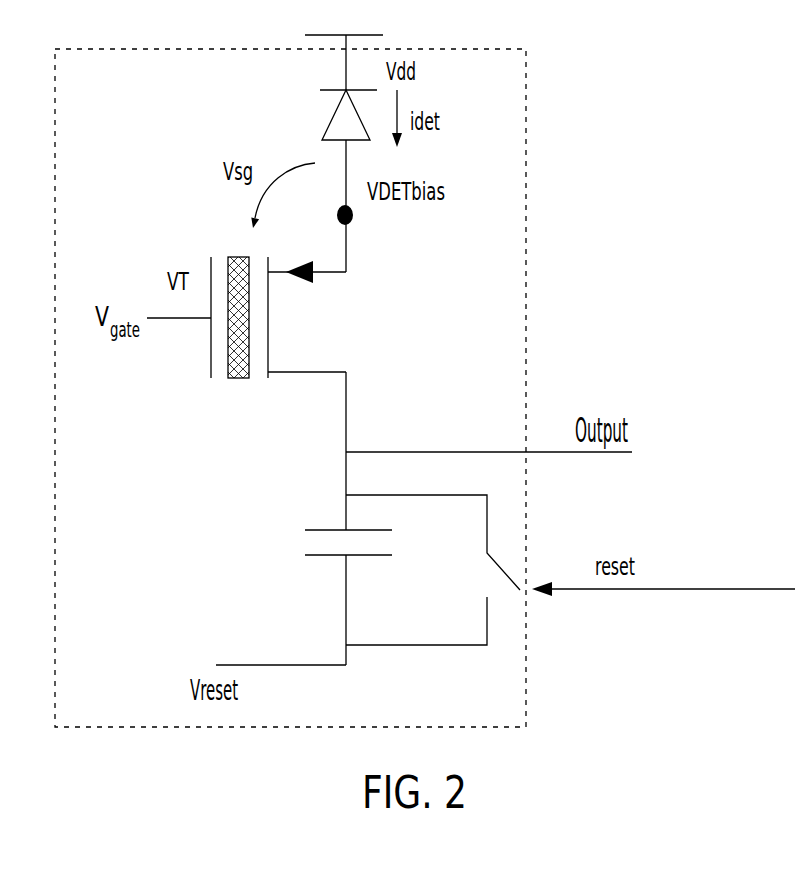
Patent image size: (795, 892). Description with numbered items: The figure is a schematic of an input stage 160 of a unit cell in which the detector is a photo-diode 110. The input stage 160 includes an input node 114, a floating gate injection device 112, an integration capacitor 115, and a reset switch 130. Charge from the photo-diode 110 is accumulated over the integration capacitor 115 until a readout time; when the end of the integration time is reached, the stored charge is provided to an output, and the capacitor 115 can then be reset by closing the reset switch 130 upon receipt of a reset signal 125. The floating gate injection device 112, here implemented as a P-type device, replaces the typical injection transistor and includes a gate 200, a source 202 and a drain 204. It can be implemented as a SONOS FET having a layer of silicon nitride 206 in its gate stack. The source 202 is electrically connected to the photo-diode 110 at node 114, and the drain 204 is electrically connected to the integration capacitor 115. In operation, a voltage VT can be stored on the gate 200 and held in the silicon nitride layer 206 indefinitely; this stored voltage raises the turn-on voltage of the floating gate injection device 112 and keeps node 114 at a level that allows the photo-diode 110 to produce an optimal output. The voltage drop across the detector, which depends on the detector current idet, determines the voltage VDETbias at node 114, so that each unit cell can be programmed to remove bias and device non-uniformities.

The photo-diode 110 is at (333, 118).
The floating gate injection device 112 is at (249, 306).
The input node 114 is at (355, 218).
The integration capacitor 115 is at (292, 538).
The reset signal 125 is at (703, 588).
The reset switch 130 is at (512, 604).
The input stage 160 is at (528, 237).
The gate 200 is at (168, 321).
The source 202 is at (328, 274).
The drain 204 is at (308, 373).
The layer of silicon nitride 206 is at (235, 380).